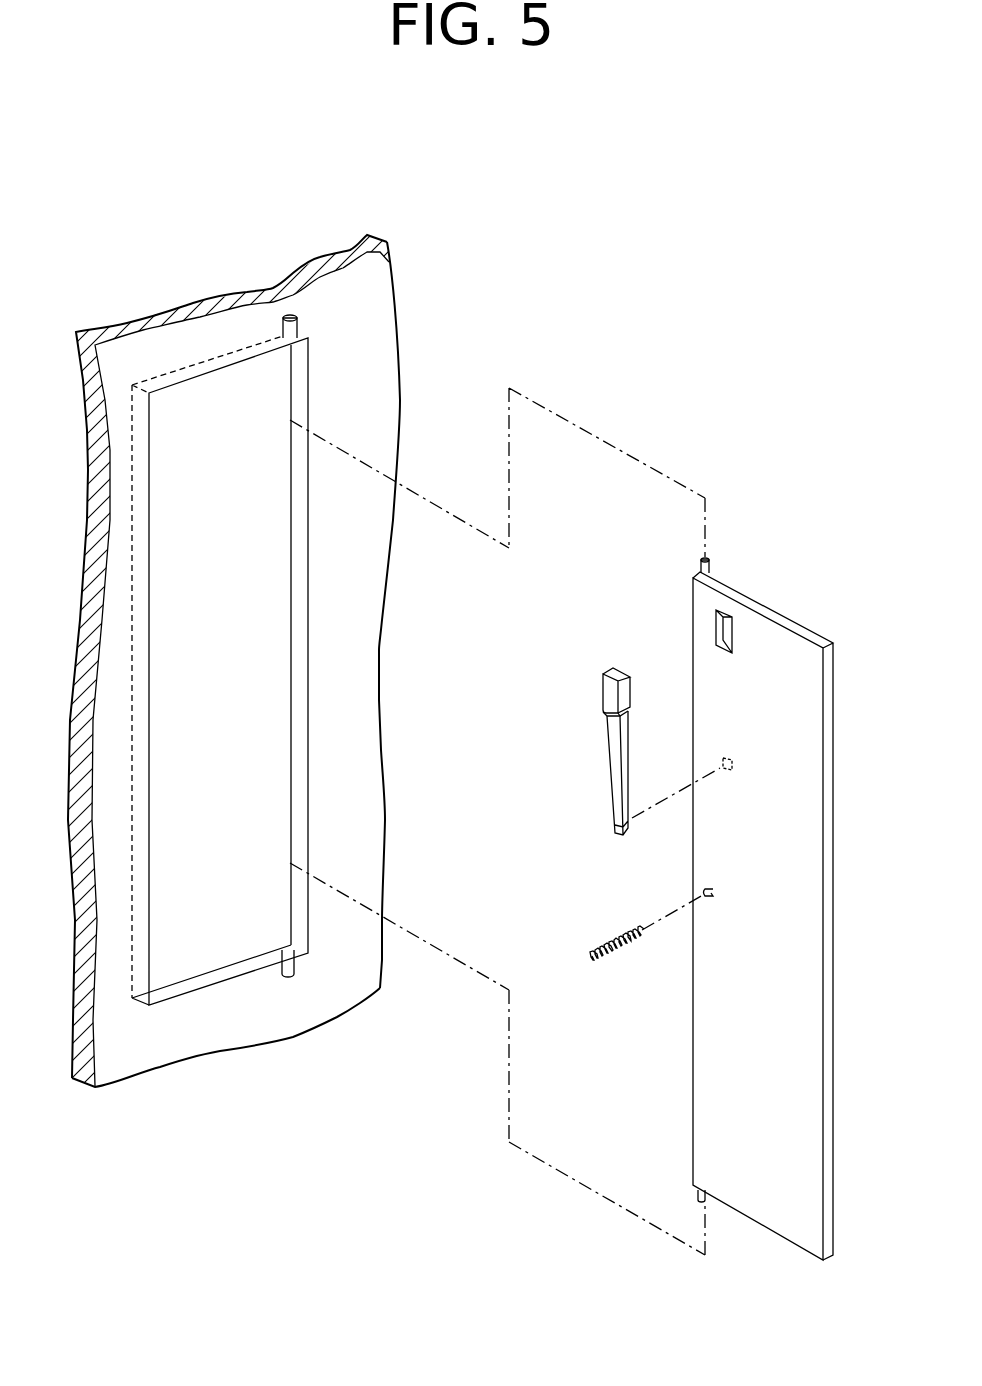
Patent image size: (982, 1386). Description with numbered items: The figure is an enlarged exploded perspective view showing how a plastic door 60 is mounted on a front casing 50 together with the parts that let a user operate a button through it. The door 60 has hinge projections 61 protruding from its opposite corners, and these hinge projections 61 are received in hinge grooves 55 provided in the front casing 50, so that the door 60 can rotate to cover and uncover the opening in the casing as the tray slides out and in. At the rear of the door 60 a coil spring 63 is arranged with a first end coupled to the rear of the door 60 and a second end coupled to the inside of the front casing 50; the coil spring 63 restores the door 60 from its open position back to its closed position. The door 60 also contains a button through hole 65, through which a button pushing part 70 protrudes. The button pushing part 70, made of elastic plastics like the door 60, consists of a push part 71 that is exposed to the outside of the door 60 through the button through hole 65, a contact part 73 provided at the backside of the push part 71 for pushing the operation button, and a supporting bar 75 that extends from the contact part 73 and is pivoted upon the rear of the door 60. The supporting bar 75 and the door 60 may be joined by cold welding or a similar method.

The front casing 50 is at (125, 1065).
The hinge grooves 55 is at (290, 977).
The door 60 is at (787, 1235).
The hinge projections 61 is at (702, 1202).
The coil spring 63 is at (612, 955).
The button through hole 65 is at (716, 630).
The button pushing part 70 is at (542, 751).
The push part 71 is at (618, 691).
The contact part 73 is at (605, 712).
The supporting bar 75 is at (500, 692).